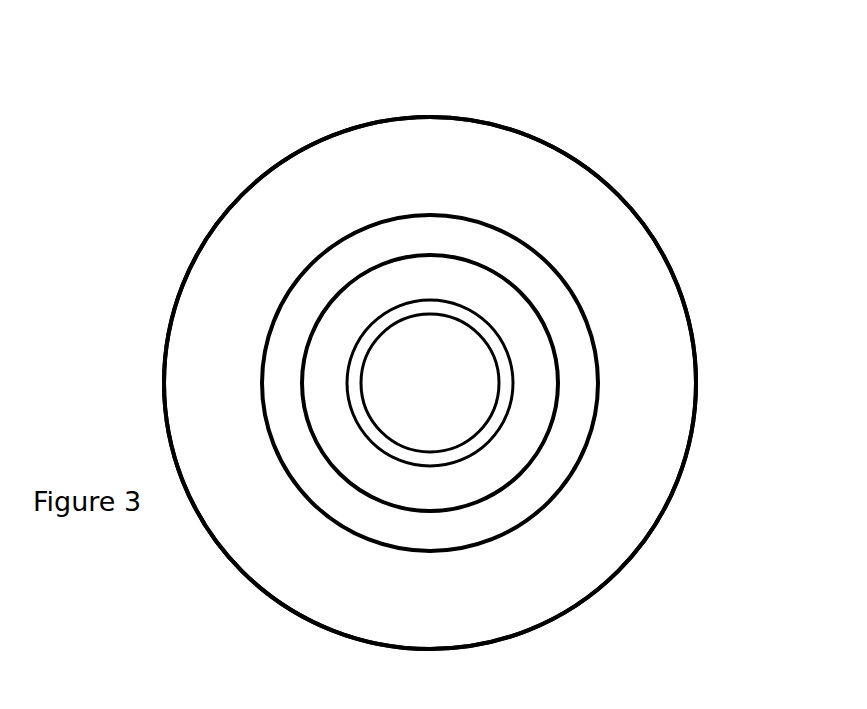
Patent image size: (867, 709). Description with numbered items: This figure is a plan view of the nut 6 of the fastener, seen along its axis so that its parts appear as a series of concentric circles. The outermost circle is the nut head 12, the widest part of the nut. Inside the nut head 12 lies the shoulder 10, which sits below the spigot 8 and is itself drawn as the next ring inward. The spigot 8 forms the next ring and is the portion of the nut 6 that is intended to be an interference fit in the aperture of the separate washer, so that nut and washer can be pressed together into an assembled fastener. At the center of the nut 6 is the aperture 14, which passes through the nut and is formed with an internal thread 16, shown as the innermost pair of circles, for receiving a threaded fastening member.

The nut 6 is at (599, 123).
The spigot 8 is at (327, 362).
The shoulder 10 is at (303, 287).
The nut head 12 is at (227, 292).
The aperture 14 is at (445, 382).
The internal thread 16 is at (488, 332).